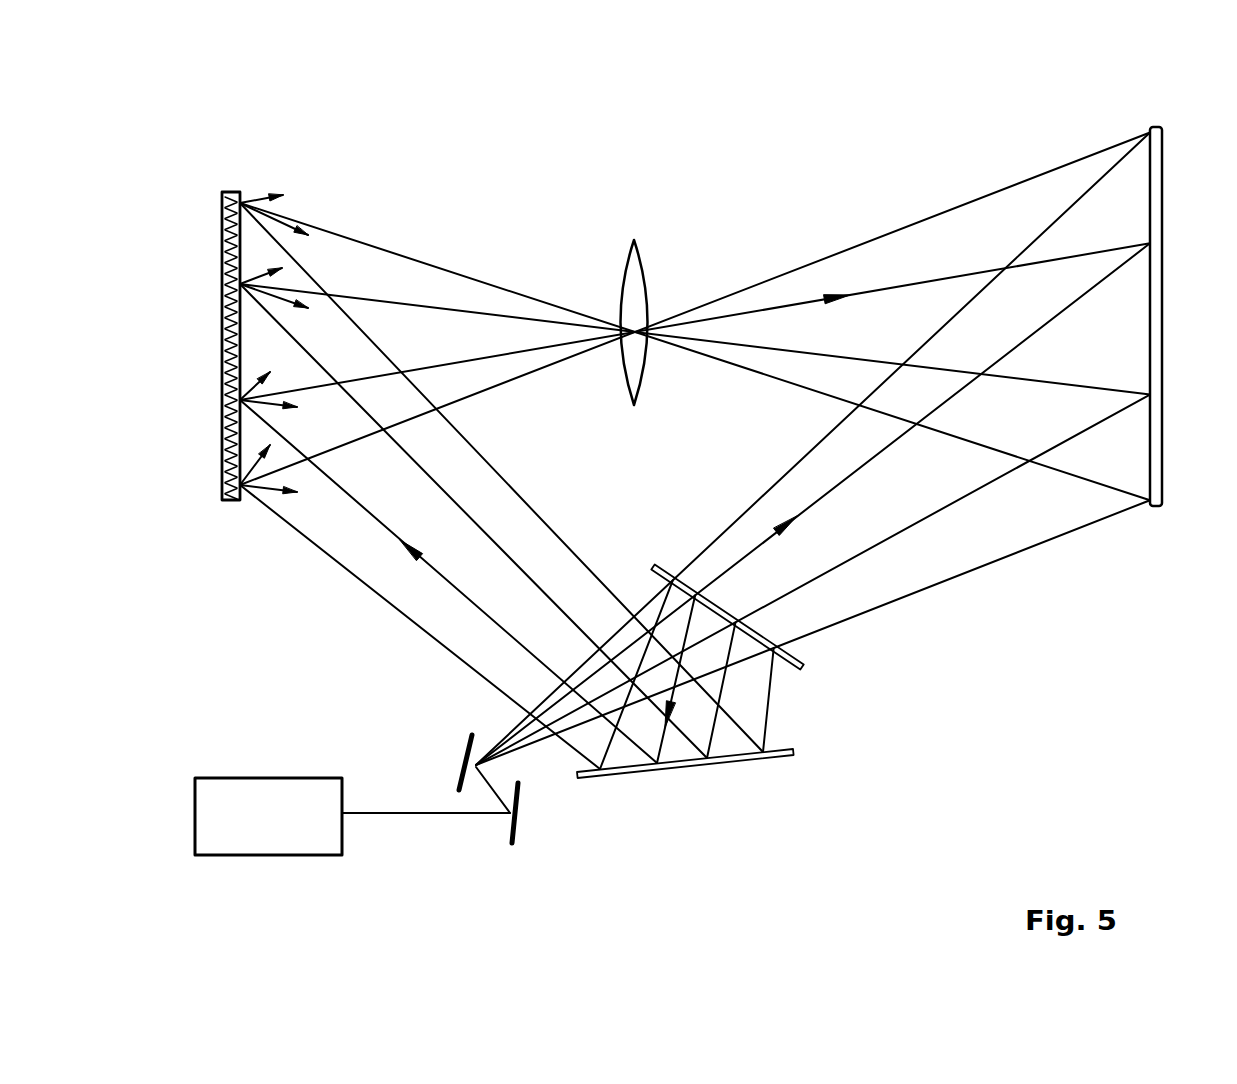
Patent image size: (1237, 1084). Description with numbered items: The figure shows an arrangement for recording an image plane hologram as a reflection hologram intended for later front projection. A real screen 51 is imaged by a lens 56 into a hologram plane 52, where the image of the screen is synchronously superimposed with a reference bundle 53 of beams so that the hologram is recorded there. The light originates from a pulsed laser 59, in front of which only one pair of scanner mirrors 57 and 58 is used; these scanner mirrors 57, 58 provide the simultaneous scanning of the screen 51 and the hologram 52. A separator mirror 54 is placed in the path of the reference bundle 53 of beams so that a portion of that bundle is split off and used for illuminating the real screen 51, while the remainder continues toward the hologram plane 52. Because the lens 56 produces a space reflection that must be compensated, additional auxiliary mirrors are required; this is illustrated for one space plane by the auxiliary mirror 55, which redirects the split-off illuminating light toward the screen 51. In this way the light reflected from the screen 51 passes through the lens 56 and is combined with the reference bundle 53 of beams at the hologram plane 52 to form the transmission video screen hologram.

The real screen 51 is at (210, 203).
The hologram plane 52 is at (1206, 97).
The reference bundle of beams 53 is at (801, 493).
The separator mirror 54 is at (813, 670).
The auxiliary mirror 55 is at (805, 753).
The lens 56 is at (676, 212).
The scanner mirror 57 is at (473, 727).
The scanner mirror 58 is at (512, 855).
The pulsed laser 59 is at (222, 860).